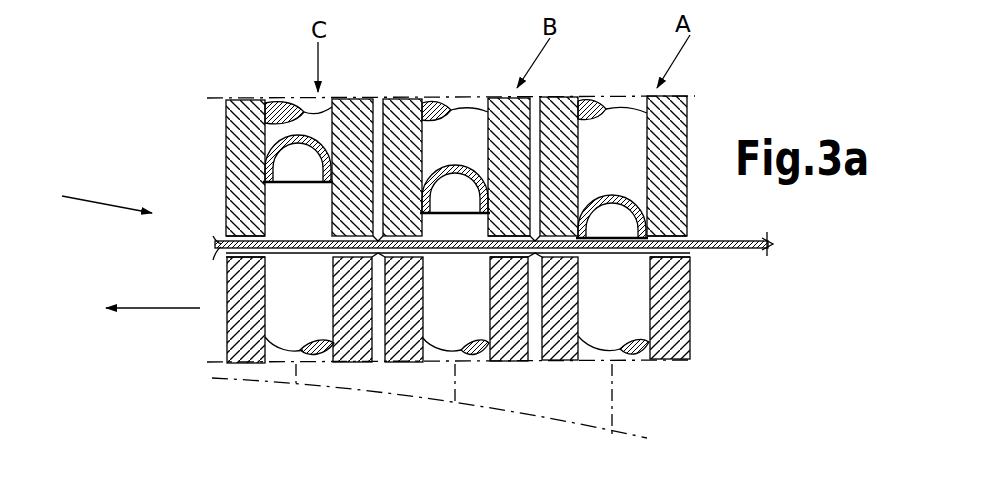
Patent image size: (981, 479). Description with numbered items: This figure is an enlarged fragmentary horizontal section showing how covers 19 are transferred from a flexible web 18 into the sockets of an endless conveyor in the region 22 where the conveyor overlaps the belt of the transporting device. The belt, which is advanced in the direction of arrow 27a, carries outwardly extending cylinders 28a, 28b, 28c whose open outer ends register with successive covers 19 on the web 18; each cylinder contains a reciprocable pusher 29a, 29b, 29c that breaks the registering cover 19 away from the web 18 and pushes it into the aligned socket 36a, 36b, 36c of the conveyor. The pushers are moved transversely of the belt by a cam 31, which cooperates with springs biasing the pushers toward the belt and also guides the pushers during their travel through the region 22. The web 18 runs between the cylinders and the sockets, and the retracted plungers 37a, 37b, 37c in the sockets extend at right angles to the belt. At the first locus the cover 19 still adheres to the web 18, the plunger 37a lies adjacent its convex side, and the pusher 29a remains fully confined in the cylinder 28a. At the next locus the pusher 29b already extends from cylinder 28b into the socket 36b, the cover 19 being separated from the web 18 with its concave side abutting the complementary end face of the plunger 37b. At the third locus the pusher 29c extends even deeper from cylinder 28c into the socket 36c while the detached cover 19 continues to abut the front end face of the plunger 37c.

The web 18 is at (494, 229).
The cover 19 is at (436, 140).
The region 22 is at (88, 194).
The arrow 27a is at (153, 336).
The cylinder 28a is at (706, 309).
The cylinder 28b is at (518, 333).
The cylinder 28c is at (235, 344).
The pusher 29a is at (631, 382).
The pusher 29b is at (448, 382).
The pusher 29c is at (299, 380).
The cam 31 is at (429, 417).
The socket 36a is at (704, 154).
The socket 36b is at (502, 137).
The socket 36c is at (201, 164).
The plunger 37a is at (612, 82).
The plunger 37b is at (425, 81).
The plunger 37c is at (289, 83).